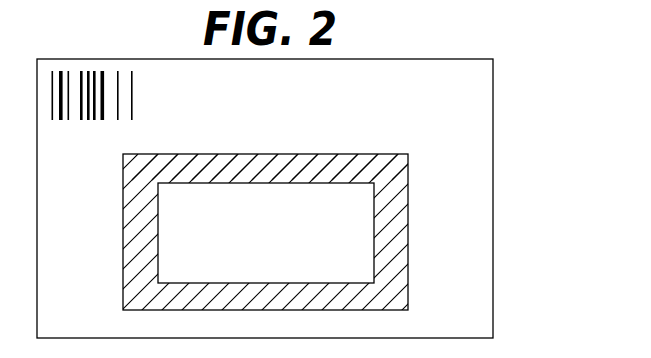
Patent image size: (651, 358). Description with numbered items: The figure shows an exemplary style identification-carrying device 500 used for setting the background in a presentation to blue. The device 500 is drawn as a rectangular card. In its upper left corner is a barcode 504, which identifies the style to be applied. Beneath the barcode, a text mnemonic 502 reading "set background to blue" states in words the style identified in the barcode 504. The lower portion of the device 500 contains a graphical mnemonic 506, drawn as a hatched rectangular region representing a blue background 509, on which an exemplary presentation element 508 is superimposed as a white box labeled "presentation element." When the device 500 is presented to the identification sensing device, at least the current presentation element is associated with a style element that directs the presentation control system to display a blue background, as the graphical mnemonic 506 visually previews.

The style identification-carrying device 500 is at (494, 147).
The mnemonic 502 is at (383, 126).
The barcode 504 is at (140, 97).
The graphical mnemonic 506 is at (280, 232).
The presentation element 508 is at (280, 275).
The blue background 509 is at (397, 205).